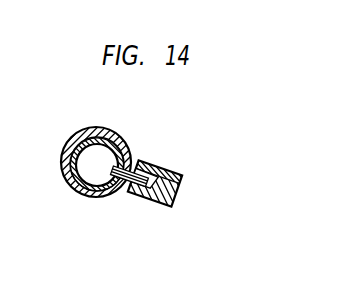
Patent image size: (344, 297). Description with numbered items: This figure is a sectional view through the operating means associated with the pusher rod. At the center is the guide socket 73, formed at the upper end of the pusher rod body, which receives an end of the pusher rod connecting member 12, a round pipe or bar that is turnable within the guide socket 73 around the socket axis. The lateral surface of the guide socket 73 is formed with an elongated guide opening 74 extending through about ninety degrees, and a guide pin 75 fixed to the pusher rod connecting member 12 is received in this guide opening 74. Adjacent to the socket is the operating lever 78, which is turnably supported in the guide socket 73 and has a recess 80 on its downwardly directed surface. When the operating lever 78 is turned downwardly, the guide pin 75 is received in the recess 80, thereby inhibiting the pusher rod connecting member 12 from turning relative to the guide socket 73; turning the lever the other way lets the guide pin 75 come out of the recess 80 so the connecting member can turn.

The pusher rod connecting member 12 is at (91, 175).
The guide socket 73 is at (56, 173).
The elongated guide opening 74 is at (96, 191).
The guide pin 75 is at (134, 175).
The operating lever 78 is at (154, 184).
The recess 80 is at (154, 184).